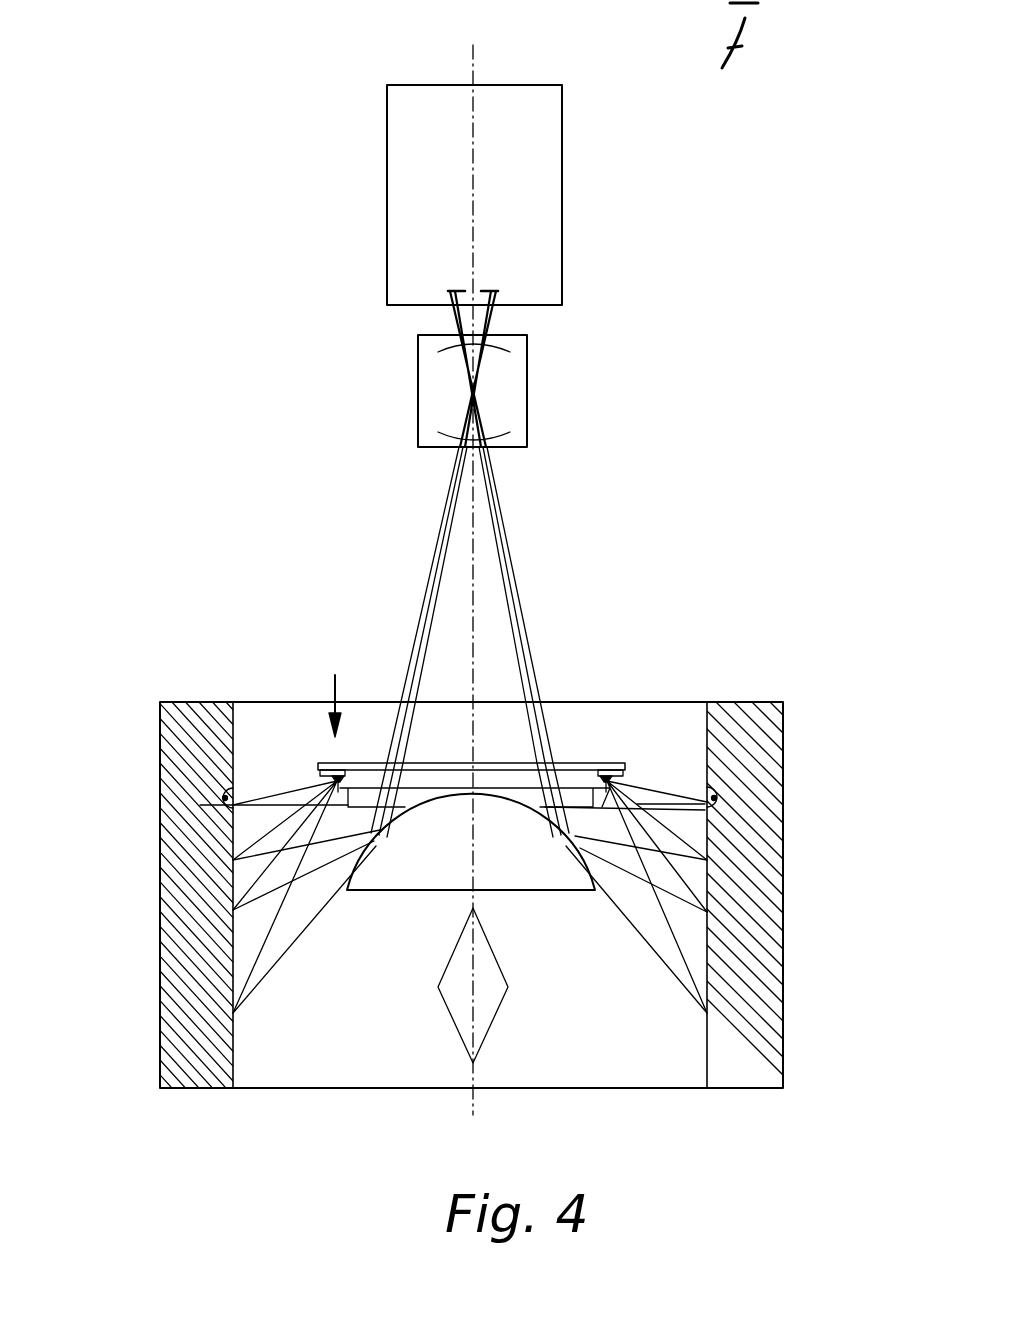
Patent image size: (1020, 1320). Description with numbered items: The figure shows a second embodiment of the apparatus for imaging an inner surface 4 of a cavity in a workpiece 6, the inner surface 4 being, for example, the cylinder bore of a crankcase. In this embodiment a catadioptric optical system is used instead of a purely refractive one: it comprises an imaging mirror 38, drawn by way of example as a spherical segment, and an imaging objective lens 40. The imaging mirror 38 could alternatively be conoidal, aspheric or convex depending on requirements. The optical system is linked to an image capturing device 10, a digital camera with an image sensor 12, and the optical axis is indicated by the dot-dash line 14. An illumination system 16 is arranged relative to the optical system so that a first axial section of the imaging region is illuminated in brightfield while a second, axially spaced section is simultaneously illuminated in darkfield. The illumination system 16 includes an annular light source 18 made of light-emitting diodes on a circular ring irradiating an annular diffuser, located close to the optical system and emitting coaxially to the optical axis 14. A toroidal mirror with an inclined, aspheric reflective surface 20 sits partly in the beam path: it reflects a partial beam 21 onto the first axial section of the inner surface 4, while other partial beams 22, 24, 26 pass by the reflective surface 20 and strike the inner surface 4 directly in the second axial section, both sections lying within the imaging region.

The inner surface 4 is at (707, 732).
The workpiece 6 is at (755, 702).
The image capturing device 10 is at (420, 126).
The image sensor 12 is at (472, 288).
The optical axis 14 is at (478, 62).
The illumination system 16 is at (328, 678).
The annular light source 18 is at (318, 763).
The reflective surface 20 is at (328, 788).
The partial beam 21 is at (222, 803).
The partial beam 22 is at (233, 860).
The partial beam 24 is at (233, 912).
The partial beam 26 is at (233, 1013).
The imaging mirror 38 is at (417, 870).
The imaging objective lens 40 is at (430, 406).